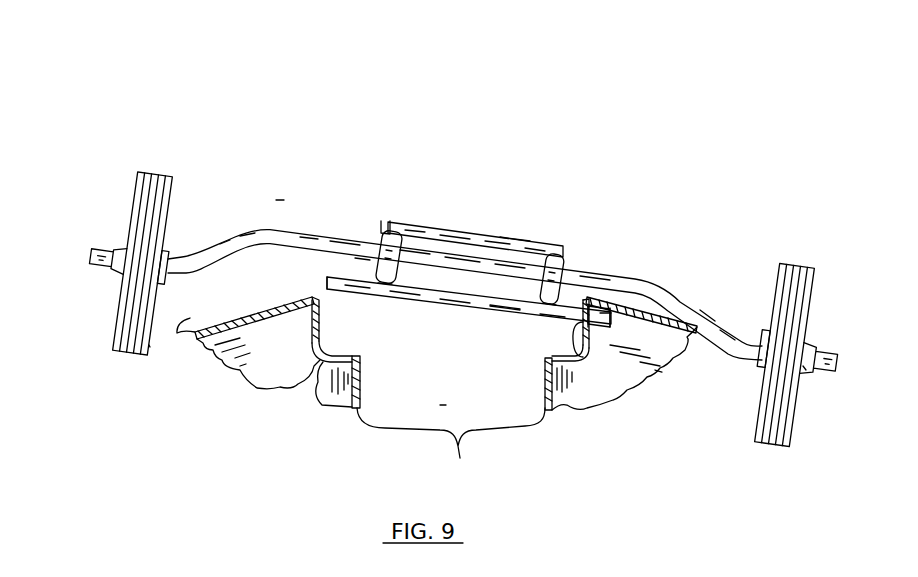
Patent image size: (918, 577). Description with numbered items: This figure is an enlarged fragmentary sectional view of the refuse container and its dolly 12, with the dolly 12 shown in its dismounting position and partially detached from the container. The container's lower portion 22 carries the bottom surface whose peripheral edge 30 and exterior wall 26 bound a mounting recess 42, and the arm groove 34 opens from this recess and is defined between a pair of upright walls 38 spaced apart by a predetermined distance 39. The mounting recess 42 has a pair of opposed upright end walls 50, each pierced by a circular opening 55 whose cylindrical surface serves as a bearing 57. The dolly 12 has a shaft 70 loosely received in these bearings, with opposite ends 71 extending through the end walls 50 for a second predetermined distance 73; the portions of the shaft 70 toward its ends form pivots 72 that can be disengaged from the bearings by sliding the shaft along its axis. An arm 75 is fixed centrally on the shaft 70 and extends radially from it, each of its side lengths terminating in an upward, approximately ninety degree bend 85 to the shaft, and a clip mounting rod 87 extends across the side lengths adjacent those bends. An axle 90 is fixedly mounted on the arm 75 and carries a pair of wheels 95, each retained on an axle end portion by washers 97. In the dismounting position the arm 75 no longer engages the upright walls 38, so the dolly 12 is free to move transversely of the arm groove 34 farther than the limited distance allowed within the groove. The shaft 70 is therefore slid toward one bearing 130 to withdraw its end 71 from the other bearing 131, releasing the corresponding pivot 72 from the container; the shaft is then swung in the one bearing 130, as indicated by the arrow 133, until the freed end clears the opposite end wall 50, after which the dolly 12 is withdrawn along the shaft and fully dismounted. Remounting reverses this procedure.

The dolly 12 is at (280, 195).
The lower portion 22 is at (255, 390).
The exterior wall 26 is at (154, 352).
The peripheral edge 30 is at (252, 312).
The arm groove 34 is at (443, 401).
The upright walls 38 is at (361, 383).
The predetermined distance 39 is at (451, 446).
The mounting recess 42 is at (313, 371).
The end walls 50 is at (326, 318).
The circular opening 55 is at (310, 318).
The bearing 57 is at (310, 333).
The shaft 70 is at (500, 331).
The opposite ends 71 is at (322, 278).
The pivots 72 is at (381, 287).
The second predetermined distance 73 is at (621, 270).
The arm 75 is at (516, 231).
The bend 85 is at (392, 230).
The clip mounting rod 87 is at (440, 229).
The axle 90 is at (343, 231).
The wheels 95 is at (160, 164).
The washers 97 is at (806, 369).
The one bearing 130 is at (309, 321).
The other bearing 131 is at (592, 316).
The arrow 133 is at (360, 267).